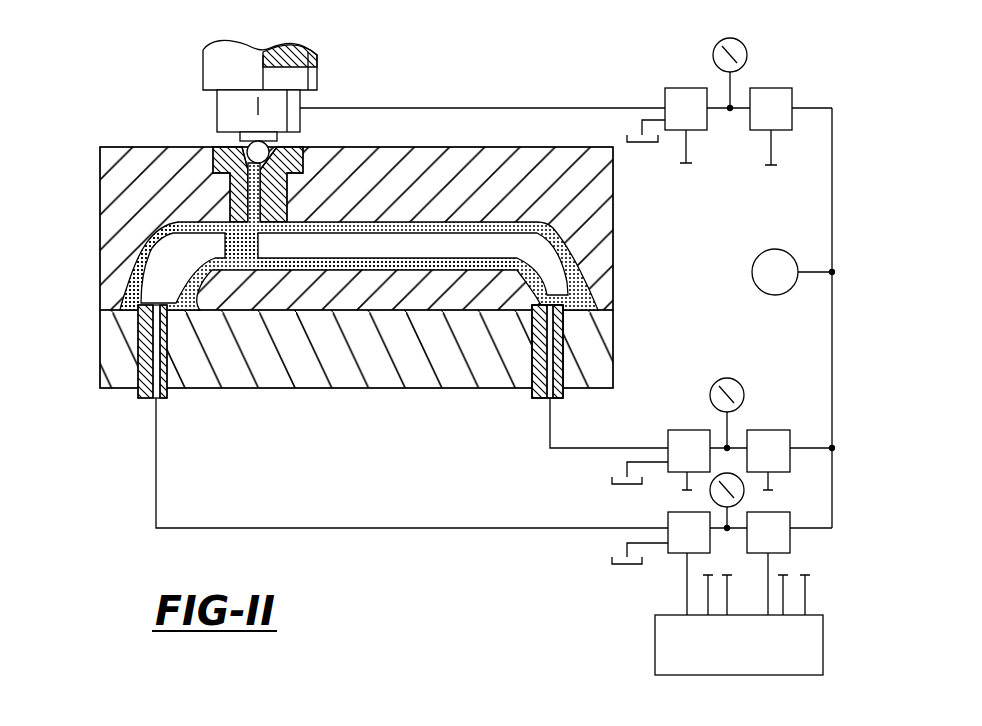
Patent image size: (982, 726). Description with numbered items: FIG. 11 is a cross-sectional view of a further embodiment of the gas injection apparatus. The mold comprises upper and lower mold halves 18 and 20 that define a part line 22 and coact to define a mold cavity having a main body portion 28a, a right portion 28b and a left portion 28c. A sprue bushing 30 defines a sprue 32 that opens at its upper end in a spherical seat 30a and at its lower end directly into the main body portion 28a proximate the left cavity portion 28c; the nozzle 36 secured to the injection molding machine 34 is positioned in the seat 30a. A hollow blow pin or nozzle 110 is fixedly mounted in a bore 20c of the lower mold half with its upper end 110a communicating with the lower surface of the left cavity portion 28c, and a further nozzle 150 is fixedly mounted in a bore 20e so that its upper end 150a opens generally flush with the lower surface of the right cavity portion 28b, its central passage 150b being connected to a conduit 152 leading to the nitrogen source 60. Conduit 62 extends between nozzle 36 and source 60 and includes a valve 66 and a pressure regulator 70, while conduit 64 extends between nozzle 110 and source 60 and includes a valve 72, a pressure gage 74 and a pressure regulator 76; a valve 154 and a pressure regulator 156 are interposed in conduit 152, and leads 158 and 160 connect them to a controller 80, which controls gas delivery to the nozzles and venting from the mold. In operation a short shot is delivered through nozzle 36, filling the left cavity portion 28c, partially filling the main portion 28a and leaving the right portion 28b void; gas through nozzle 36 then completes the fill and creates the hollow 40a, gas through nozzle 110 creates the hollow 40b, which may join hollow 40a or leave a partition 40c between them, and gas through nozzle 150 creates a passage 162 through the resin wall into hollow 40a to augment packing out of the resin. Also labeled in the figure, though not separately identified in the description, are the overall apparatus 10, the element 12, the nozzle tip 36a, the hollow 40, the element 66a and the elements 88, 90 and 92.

The injection molding apparatus 10 is at (129, 396).
The injection nozzle 12 is at (332, 78).
The upper mold half 18 is at (620, 272).
The lower mold half 20 is at (614, 352).
The bore 20c is at (163, 350).
The bore 20e is at (565, 357).
The part line 22 is at (603, 306).
The main body portion 28a is at (390, 232).
The right cavity portion 28b is at (583, 280).
The left cavity portion 28c is at (138, 297).
The sprue bushing 30 is at (288, 184).
The spherical seat 30a is at (246, 146).
The sprue 32 is at (237, 210).
The injection molding machine 34 is at (203, 52).
The nozzle 36 is at (217, 105).
The nozzle tip 36a is at (278, 141).
The mold cavity 40 is at (570, 228).
The hollow 40a is at (490, 258).
The hollow 40b is at (140, 283).
The partition 40c is at (243, 262).
The nitrogen source 60 is at (760, 250).
The conduit 62 is at (470, 107).
The conduit 64 is at (464, 530).
The valve 66 is at (686, 88).
The valve actuator 66a is at (642, 121).
The pressure regulator 70 is at (779, 88).
The valve 72 is at (677, 554).
The pressure gage 74 is at (710, 500).
The pressure regulator 76 is at (792, 544).
The controller 80 is at (655, 645).
The control lead 88 is at (686, 150).
The control lead 90 is at (775, 150).
The control lead 92 is at (687, 600).
The hollow blow pin or nozzle 110 is at (163, 400).
The upper end 110a is at (133, 305).
The nozzle 150 is at (552, 405).
The upper end 150a is at (517, 307).
The central passage 150b is at (534, 392).
The conduit 152 is at (580, 452).
The valve 154 is at (687, 430).
The pressure regulator 156 is at (770, 430).
The lead 158 is at (687, 484).
The lead 160 is at (768, 485).
The passage 162 is at (528, 298).